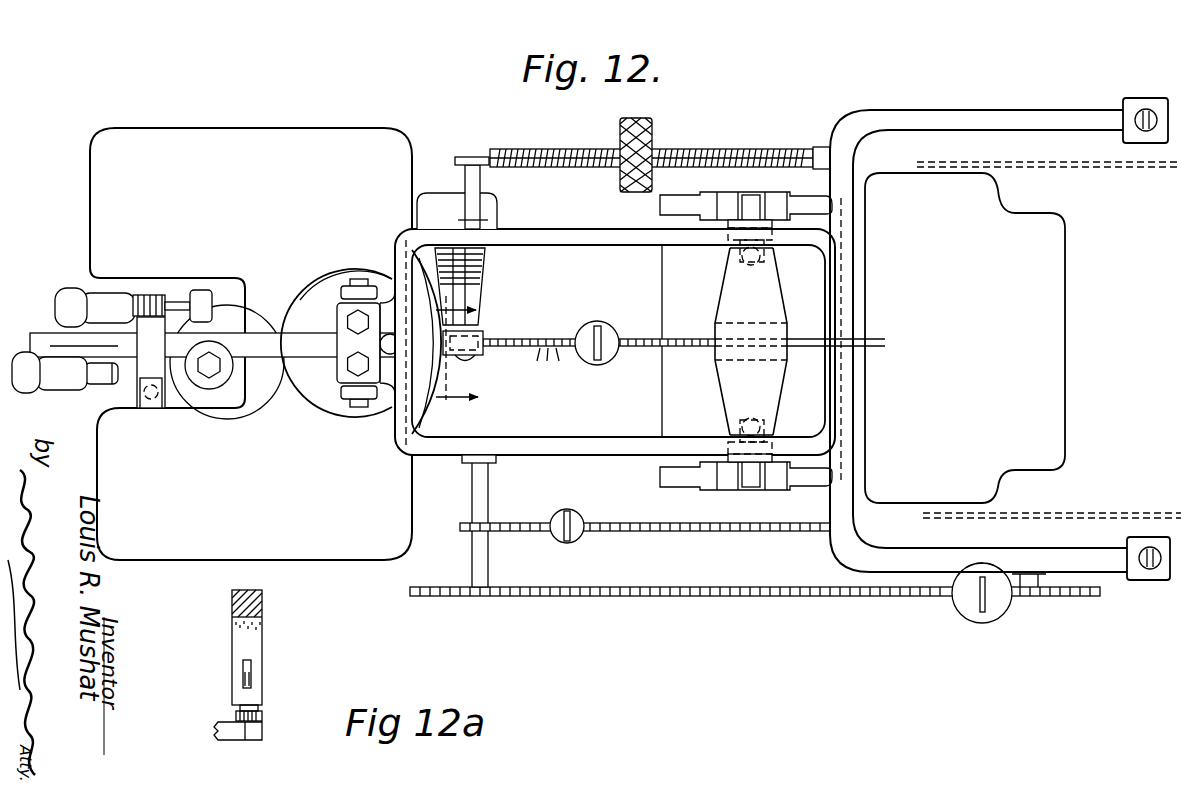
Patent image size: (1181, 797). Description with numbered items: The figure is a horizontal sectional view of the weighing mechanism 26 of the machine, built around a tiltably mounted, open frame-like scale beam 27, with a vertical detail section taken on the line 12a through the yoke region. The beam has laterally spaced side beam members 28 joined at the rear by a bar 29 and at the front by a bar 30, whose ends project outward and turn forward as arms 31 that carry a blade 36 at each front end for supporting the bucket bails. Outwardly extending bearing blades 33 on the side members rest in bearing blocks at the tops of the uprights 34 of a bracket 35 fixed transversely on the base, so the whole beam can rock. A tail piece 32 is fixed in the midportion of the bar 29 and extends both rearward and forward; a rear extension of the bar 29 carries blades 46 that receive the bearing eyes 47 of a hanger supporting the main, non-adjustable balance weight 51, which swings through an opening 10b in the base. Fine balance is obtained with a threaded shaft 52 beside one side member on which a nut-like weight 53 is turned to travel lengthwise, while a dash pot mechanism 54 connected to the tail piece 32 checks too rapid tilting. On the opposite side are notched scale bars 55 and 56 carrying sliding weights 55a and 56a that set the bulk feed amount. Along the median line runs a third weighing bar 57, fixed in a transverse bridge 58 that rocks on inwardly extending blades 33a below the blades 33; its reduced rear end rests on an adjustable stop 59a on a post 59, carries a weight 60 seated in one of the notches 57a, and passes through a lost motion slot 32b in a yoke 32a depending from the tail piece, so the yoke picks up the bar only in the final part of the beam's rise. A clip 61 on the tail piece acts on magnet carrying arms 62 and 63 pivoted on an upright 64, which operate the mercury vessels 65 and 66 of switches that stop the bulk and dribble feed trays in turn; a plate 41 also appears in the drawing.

In FIG. 12, the opening 10b is at (205, 130).
In FIG. 12, the section line 12a is at (473, 352).
In FIG. 12, the weighing mechanism 26 is at (503, 128).
In FIG. 12, the scale beam 27 is at (573, 226).
In FIG. 12, the side beam members 28 is at (548, 247).
In FIG. 12, the bar 29 is at (392, 424).
In FIG. 12, the bar 30 is at (825, 297).
In FIG. 12, the arms 31 is at (943, 114).
In FIG. 12, the tail piece 32 is at (280, 332).
In FIG. 12A, the tail piece 32 is at (266, 598).
In FIG. 12, the yoke 32a is at (476, 358).
In FIG. 12A, the yoke 32a is at (264, 627).
In FIG. 12A, the lost motion slot 32b is at (243, 668).
In FIG. 12, the bearing blades 33 is at (758, 206).
In FIG. 12, the blade 33a is at (740, 259).
In FIG. 12, the uprights 34 is at (712, 200).
In FIG. 12, the bracket 35 is at (664, 388).
In FIG. 12, the blade 36 is at (1148, 108).
In FIG. 12, the plate 41 is at (1033, 170).
In FIG. 12, the blades 46 is at (358, 280).
In FIG. 12, the bearing eyes 47 is at (341, 292).
In FIG. 12, the main balance weight 51 is at (344, 268).
In FIG. 12, the threaded shaft 52 is at (700, 148).
In FIG. 12, the nut-like weight 53 is at (653, 124).
In FIG. 12, the dash pot mechanism 54 is at (226, 304).
In FIG. 12, the scale bar 55 is at (675, 587).
In FIG. 12, the weight 55a is at (974, 620).
In FIG. 12, the scale bar 56 is at (666, 531).
In FIG. 12, the weight 56a is at (577, 545).
In FIG. 12, the third weighing bar 57 is at (545, 338).
In FIG. 12A, the third weighing bar 57 is at (252, 688).
In FIG. 12, the notches 57a is at (553, 361).
In FIG. 12, the transverse bridge 58 is at (718, 313).
In FIG. 12, the post 59 is at (485, 285).
In FIG. 12A, the post 59 is at (220, 735).
In FIG. 12A, the adjustable stop 59a is at (262, 712).
In FIG. 12, the weight 60 is at (594, 324).
In FIG. 12, the clip 61 is at (185, 362).
In FIG. 12, the magnet carrying arm 62 is at (141, 402).
In FIG. 12, the magnet carrying arm 63 is at (175, 298).
In FIG. 12, the upright 64 is at (42, 340).
In FIG. 12, the mercury containing vessel 65 is at (68, 380).
In FIG. 12, the mercury containing vessel 66 is at (108, 300).